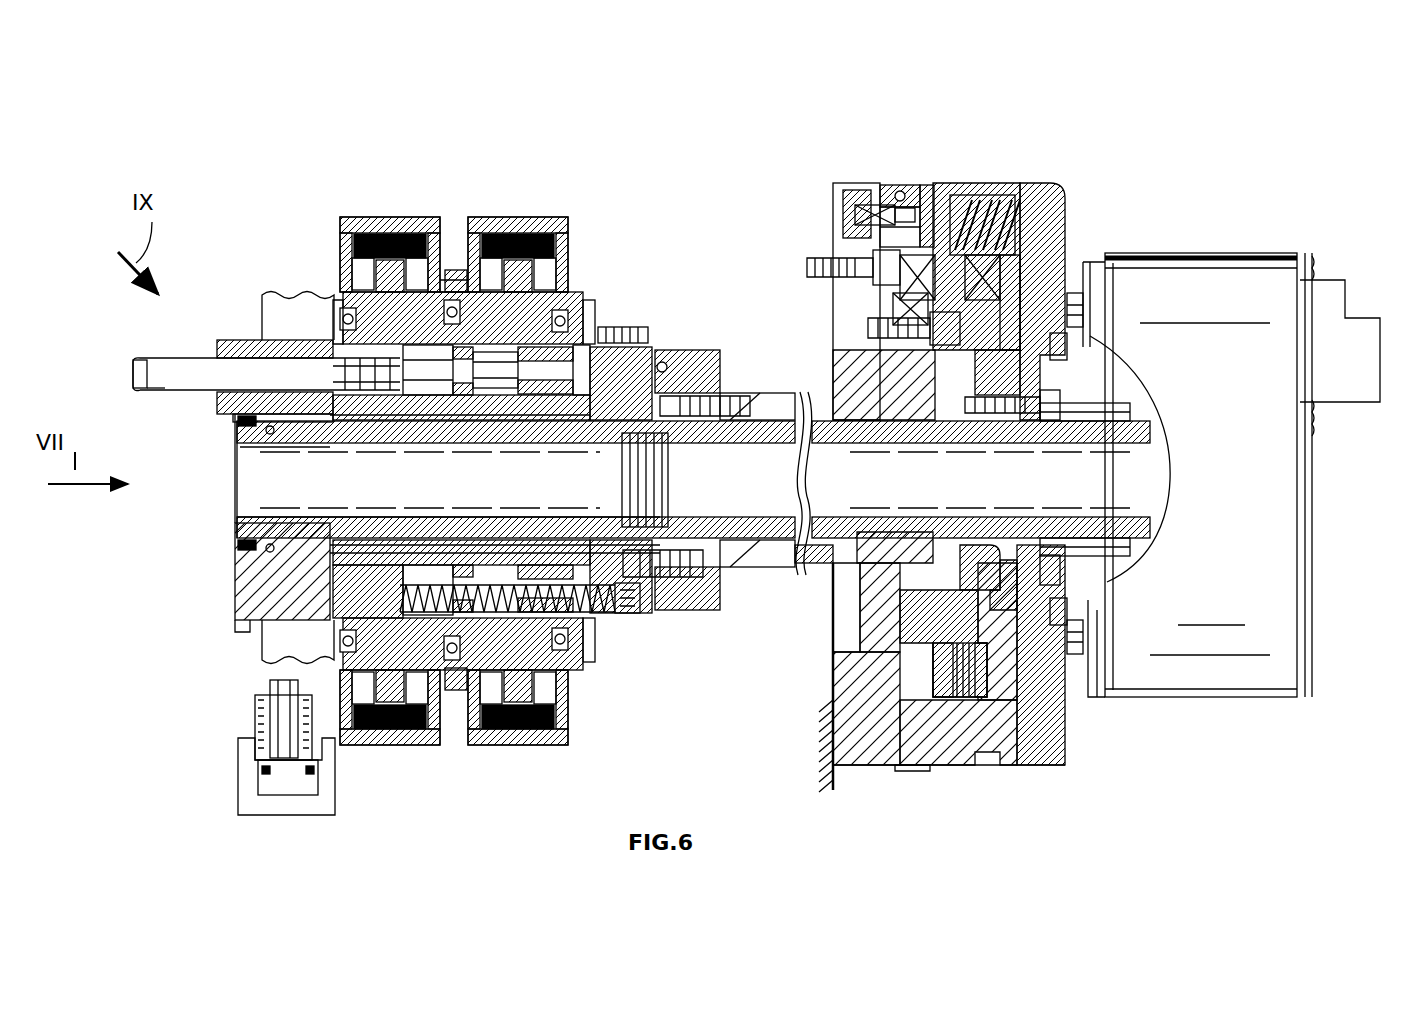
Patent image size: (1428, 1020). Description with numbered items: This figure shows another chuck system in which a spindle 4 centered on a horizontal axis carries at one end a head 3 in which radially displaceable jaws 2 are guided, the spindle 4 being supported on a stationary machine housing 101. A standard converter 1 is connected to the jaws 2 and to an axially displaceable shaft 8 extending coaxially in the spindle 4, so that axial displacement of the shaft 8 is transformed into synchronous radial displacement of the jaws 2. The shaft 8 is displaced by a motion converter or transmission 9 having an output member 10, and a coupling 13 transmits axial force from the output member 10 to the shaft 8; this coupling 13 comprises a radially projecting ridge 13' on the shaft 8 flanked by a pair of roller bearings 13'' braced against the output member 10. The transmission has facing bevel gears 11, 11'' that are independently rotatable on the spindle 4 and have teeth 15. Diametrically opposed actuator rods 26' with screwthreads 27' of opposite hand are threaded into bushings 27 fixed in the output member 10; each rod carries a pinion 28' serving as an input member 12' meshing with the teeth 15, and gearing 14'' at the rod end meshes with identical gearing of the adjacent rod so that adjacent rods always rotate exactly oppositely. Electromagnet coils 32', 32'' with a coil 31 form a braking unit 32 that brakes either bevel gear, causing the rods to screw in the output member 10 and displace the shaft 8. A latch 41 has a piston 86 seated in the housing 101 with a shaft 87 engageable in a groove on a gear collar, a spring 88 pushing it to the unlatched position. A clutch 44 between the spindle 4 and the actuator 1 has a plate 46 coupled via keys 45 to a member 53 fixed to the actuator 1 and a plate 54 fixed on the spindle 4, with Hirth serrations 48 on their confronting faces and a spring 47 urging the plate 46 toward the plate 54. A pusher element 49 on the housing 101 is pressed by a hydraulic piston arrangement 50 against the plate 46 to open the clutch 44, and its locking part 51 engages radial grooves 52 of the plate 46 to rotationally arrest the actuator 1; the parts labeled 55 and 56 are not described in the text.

The converter 1 is at (1256, 284).
The jaws 2 is at (1356, 336).
The head 3 is at (880, 372).
The spindle 4 is at (775, 392).
The shaft 8 is at (598, 524).
The motion converter or transmission 9 is at (458, 240).
The output member 10 is at (243, 340).
The bevel gear 11 is at (478, 286).
The bevel gear 11'' is at (316, 278).
The input member 12' is at (554, 414).
The coupling 13 is at (448, 488).
The ridge 13' is at (285, 468).
The roller bearings 13'' is at (367, 530).
The gearing 14'' is at (624, 427).
The teeth 15 is at (450, 648).
The actuator screw or rod 26' is at (123, 350).
The bushing 27 is at (266, 351).
The external screwthread 27' is at (139, 409).
The pinion 28' is at (461, 414).
The coil 31 is at (392, 216).
The braking unit 32 is at (482, 204).
The coil 32' is at (518, 736).
The coil 32'' is at (390, 736).
The latch 41 is at (285, 762).
The clutch 44 is at (929, 778).
The keys 45 is at (1072, 320).
The plate 46 is at (1052, 196).
The spring 47 is at (974, 196).
The Hirth serrations 48 is at (1022, 202).
The pusher element 49 is at (898, 186).
The hydraulic piston arrangement 50 is at (852, 186).
The locking part 51 is at (905, 216).
The radial grooves 52 is at (922, 190).
The member 53 is at (1058, 236).
The plate 54 is at (892, 310).
The screw 55 is at (1102, 374).
The seal 56 is at (1015, 580).
The piston 86 is at (290, 792).
The shaft 87 is at (258, 702).
The spring 88 is at (262, 736).
The machine housing 101 is at (828, 735).